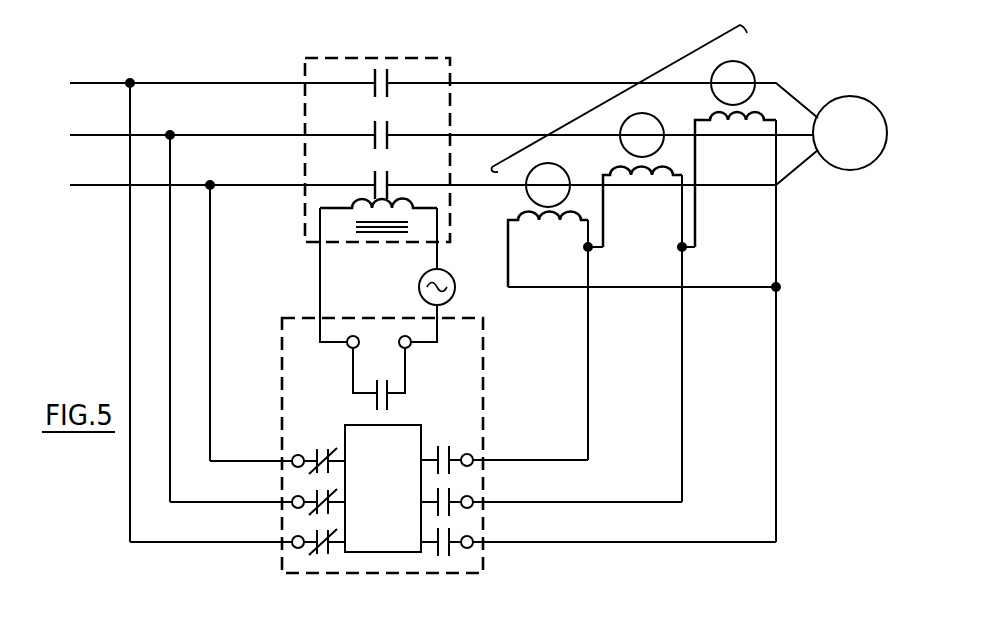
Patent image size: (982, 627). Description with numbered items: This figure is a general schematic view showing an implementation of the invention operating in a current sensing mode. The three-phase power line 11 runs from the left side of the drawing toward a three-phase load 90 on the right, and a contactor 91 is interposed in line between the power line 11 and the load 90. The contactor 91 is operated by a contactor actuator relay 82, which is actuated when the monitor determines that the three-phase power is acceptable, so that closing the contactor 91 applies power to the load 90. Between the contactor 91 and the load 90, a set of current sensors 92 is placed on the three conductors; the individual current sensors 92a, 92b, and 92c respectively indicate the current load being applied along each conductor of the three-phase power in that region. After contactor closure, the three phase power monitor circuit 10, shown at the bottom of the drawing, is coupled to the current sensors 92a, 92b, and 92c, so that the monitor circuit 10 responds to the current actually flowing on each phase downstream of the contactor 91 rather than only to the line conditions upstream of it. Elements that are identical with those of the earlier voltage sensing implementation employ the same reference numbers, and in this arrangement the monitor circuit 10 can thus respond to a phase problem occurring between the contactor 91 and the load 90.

The three phase power monitor circuit 10 is at (400, 548).
The three-phase power line 11 is at (170, 100).
The contactor actuator relay 82 is at (312, 218).
The three-phase load 90 is at (840, 96).
The contactor 91 is at (433, 80).
The current sensors 92 is at (598, 95).
The current sensor 92a is at (543, 258).
The current sensor 92b is at (633, 213).
The current sensor 92c is at (735, 162).